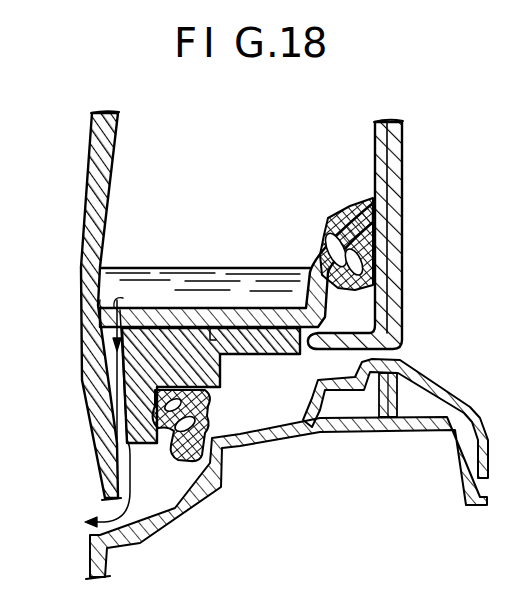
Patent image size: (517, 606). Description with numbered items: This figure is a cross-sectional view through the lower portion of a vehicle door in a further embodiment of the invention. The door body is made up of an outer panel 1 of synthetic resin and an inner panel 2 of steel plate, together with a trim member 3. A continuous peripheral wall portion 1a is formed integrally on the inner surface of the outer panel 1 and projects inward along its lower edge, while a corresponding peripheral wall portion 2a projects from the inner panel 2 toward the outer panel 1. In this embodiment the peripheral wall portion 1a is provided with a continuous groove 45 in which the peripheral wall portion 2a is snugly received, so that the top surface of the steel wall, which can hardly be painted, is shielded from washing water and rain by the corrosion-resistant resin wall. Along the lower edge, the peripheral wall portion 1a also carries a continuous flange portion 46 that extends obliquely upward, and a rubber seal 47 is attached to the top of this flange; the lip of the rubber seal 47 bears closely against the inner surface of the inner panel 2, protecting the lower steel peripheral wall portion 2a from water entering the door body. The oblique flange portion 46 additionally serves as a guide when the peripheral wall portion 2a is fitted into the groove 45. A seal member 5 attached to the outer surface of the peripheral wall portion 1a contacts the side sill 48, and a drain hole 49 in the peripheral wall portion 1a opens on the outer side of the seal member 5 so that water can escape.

The outer panel 1 is at (86, 170).
The peripheral wall portion 1a is at (285, 322).
The inner panel 2 is at (402, 153).
The peripheral wall portion 2a is at (253, 345).
The trim member 3 is at (404, 228).
The seal member 5 is at (170, 440).
The groove 45 is at (226, 322).
The flange portion 46 is at (401, 267).
The rubber seal 47 is at (329, 218).
The side sill 48 is at (182, 517).
The drain hole 49 is at (110, 384).